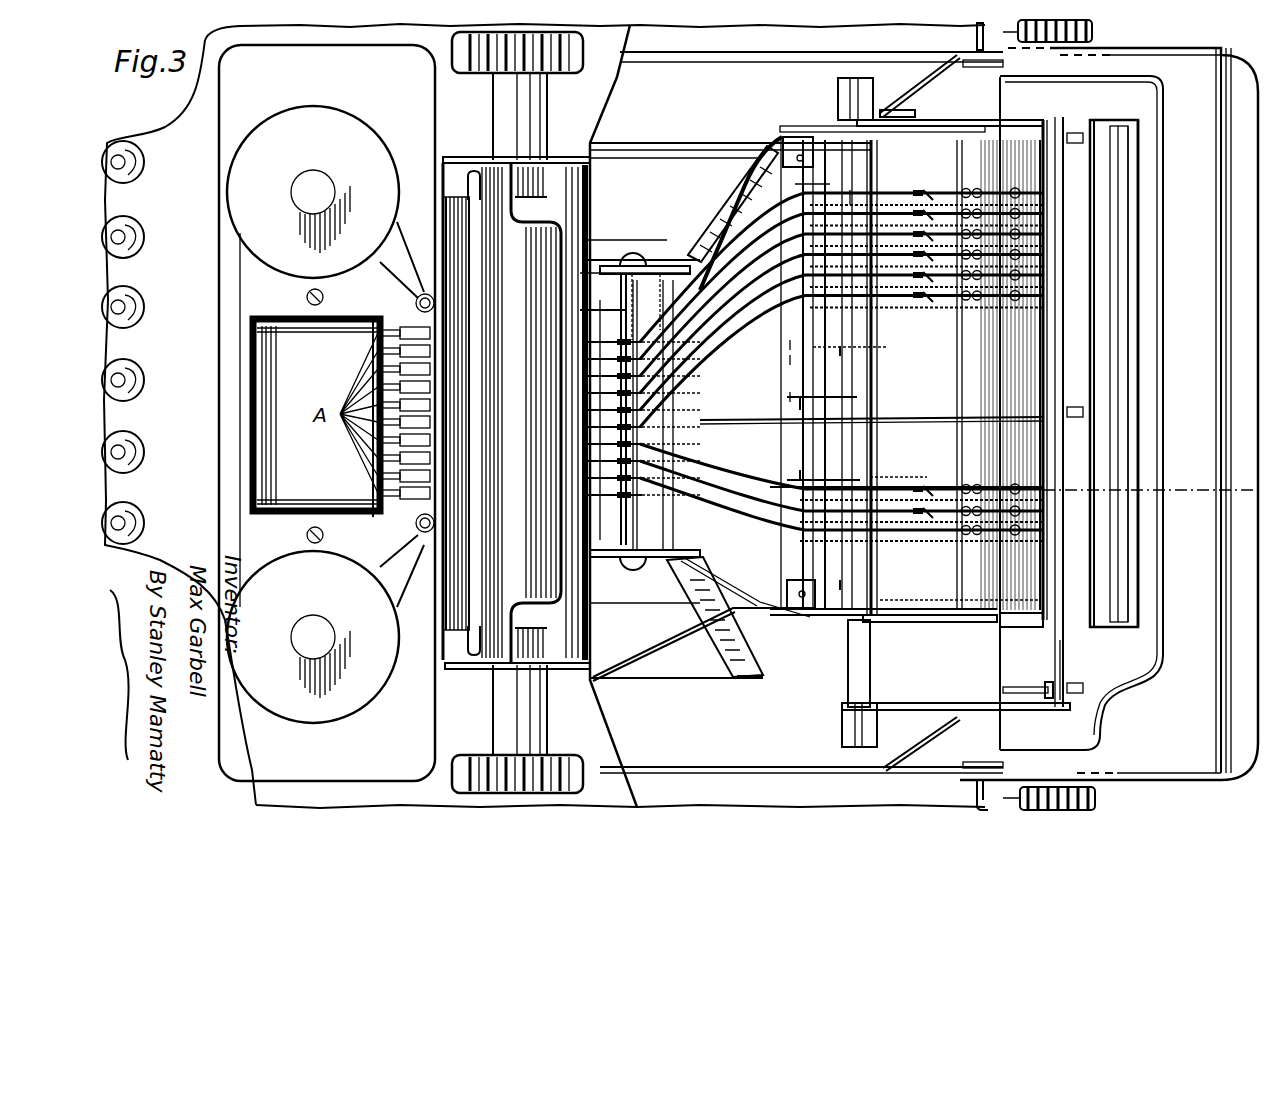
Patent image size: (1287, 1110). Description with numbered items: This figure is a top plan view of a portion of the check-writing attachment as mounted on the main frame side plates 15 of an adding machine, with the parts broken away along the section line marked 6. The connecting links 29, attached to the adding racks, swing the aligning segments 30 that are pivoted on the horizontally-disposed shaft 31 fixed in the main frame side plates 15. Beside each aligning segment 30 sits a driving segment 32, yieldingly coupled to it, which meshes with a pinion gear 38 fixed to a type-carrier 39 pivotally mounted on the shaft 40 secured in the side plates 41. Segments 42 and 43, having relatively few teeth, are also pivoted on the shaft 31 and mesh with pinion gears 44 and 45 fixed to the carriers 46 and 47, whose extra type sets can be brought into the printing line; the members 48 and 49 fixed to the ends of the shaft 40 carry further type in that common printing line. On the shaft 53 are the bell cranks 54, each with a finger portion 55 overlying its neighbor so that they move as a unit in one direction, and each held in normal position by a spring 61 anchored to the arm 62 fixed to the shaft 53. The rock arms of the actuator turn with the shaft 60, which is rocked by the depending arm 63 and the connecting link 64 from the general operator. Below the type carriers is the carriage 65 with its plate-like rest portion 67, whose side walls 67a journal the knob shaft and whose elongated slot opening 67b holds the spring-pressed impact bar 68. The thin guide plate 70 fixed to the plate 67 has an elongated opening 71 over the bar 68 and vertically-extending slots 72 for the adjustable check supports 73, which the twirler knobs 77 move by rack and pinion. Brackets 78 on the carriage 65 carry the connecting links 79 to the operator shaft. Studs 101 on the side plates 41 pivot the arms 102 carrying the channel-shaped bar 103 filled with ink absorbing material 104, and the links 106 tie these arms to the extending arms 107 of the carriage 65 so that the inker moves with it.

The section line 6- 6 is at (440, 423).
The main frame side plates 15 is at (603, 262).
The connecting link 29 is at (640, 243).
The aligning segment 30 is at (609, 380).
The horizontally-disposed shaft 31 is at (640, 292).
The driving segment 32 is at (707, 263).
The pinion gear 38 is at (927, 190).
The type-carrier 39 is at (975, 188).
The horizontally-disposed shaft 40 is at (952, 127).
The side plates 41 is at (780, 133).
The segment 42 is at (750, 490).
The segment 43 is at (740, 430).
The pinion gear 44 is at (945, 490).
The pinion gear 45 is at (950, 415).
The carrier 46 is at (935, 446).
The carrier 47 is at (935, 369).
The member 48 is at (943, 596).
The member 49 is at (945, 159).
The horizontally-disposed shaft 53 is at (840, 350).
The bell crank 54 is at (850, 197).
The finger portion 55 is at (790, 345).
The horizontally extending shaft 60 is at (790, 360).
The spring 61 is at (857, 403).
The arm 62 is at (803, 187).
The depending arm 63 is at (860, 160).
The connecting link 64 is at (695, 143).
The carriage 65 is at (1229, 785).
The plate-like rest portion 67 is at (1155, 709).
The side walls 67a is at (1160, 48).
The elongated slot opening 67b is at (1130, 353).
The impact bar 68 is at (1122, 427).
The guide plate 70 is at (1161, 591).
The elongated opening 71 is at (1103, 286).
The vertically-extending slots 72 is at (1077, 133).
The adjustable guide or check support 73 is at (1050, 687).
The twirler knobs 77 is at (1092, 33).
The extending arms or brackets 78 is at (980, 48).
The connecting links 79 is at (823, 62).
The studs or shafts 101 is at (860, 80).
The arms 102 is at (1027, 120).
The channel-shaped bar 103 is at (1063, 163).
The ink absorbing material 104 is at (1021, 625).
The links 106 is at (903, 110).
The extending arms 107 is at (905, 85).